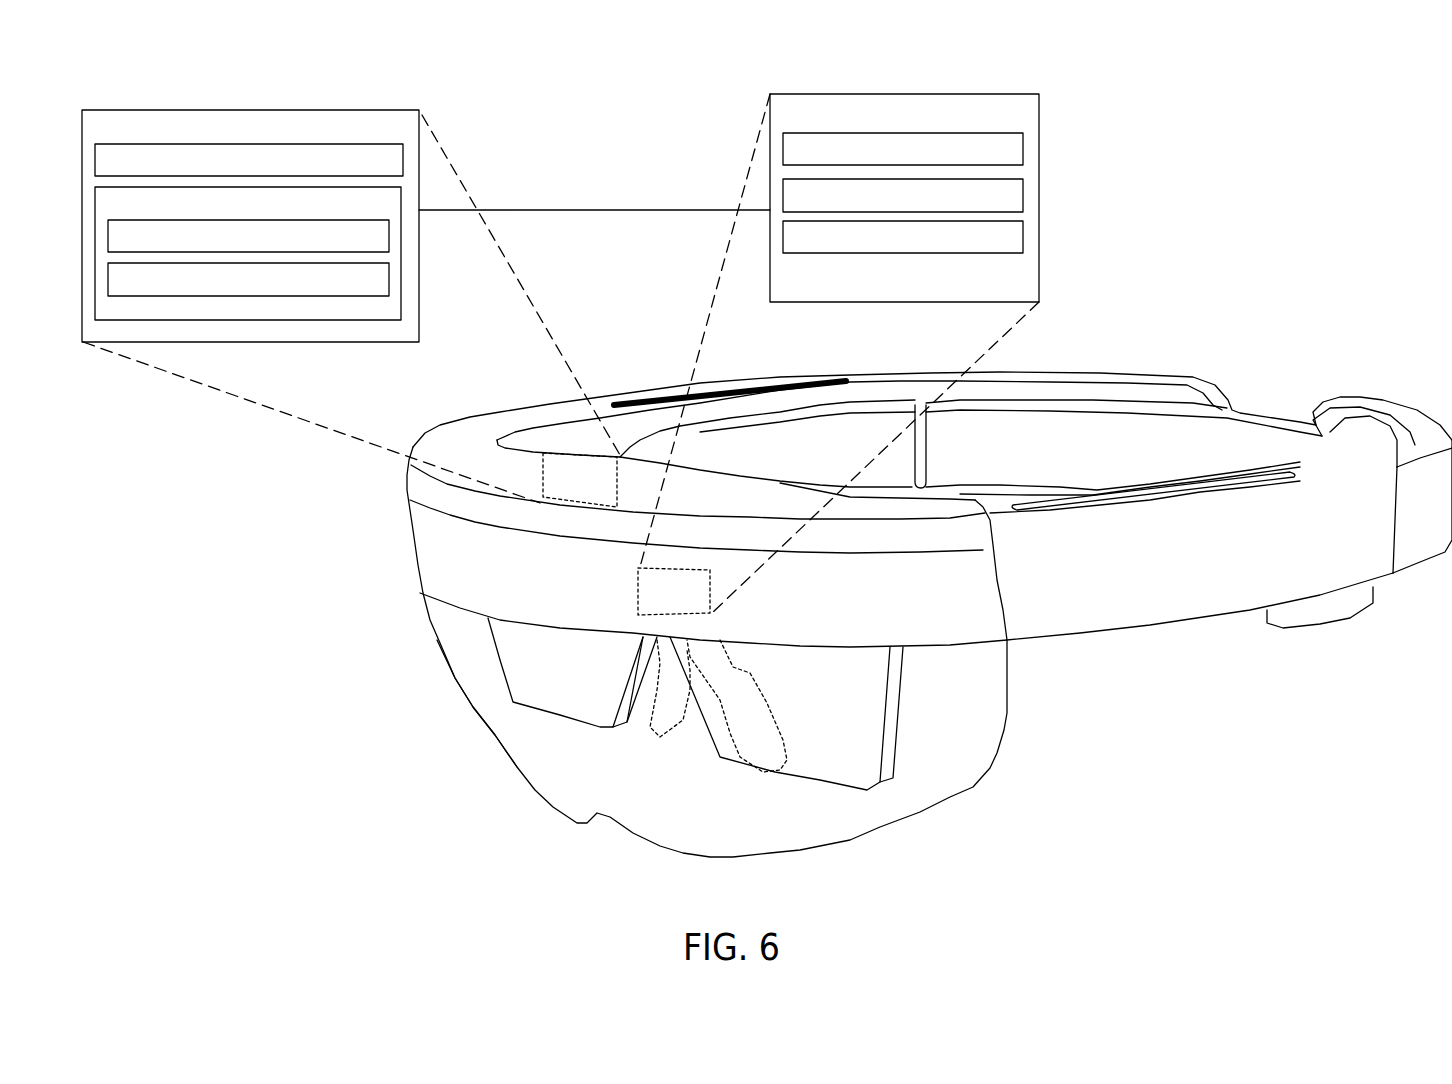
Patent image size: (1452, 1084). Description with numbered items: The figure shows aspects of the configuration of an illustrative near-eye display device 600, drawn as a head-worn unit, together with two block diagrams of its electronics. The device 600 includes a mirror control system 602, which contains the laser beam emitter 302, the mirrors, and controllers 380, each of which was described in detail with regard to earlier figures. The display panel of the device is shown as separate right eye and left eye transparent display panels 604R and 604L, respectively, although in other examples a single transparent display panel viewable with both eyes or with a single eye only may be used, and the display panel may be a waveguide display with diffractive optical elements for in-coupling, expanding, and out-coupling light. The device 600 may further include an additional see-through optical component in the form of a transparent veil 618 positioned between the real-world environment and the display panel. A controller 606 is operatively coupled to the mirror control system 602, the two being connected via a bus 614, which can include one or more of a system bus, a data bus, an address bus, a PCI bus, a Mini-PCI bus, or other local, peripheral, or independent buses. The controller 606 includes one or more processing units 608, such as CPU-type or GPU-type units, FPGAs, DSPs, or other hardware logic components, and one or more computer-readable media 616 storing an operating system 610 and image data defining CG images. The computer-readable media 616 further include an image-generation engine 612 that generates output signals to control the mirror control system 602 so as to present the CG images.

The near-eye display device 600 is at (876, 592).
The mirror control system 602 is at (975, 196).
The left eye transparent display panel 604L is at (840, 743).
The right eye transparent display panel 604R is at (567, 680).
The controller 606 is at (291, 230).
The processing unit(s) 608 is at (383, 160).
The operating system 610 is at (377, 242).
The image-generation engine 612 is at (380, 285).
The bus 614 is at (636, 208).
The computer-readable media 616 is at (347, 321).
The transparent veil 618 is at (457, 658).
The controllers 380 is at (1024, 145).
The laser beam emitter 302 is at (1024, 192).